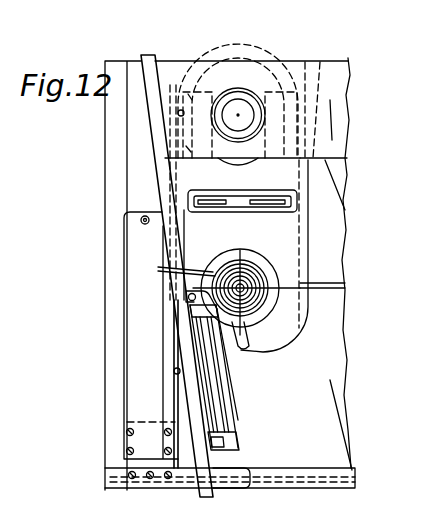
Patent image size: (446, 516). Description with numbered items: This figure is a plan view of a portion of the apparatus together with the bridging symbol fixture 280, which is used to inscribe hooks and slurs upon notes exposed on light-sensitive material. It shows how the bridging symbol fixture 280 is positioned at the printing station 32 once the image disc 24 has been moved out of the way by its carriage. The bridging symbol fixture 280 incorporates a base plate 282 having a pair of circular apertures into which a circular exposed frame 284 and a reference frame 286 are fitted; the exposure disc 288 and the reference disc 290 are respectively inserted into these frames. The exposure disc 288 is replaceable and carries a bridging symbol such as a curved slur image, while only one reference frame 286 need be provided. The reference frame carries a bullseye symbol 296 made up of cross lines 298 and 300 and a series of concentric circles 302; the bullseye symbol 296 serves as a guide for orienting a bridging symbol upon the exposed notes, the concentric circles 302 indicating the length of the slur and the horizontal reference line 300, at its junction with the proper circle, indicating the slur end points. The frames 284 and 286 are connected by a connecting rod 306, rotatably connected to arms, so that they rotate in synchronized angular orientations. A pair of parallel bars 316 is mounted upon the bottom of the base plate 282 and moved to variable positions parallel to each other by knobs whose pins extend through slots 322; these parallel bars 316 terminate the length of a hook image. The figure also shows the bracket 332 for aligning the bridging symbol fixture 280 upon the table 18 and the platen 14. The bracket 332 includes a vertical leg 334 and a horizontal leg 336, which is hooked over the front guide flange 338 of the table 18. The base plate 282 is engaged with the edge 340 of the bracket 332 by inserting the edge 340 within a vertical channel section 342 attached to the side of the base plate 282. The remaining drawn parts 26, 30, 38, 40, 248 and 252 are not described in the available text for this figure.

The platen 14 is at (330, 205).
The table 18 is at (328, 378).
The image disc 24 is at (340, 74).
The side plate 26 is at (340, 139).
The roller shaft 30 is at (248, 117).
The printing station 32 is at (239, 84).
The inclined bar 38 is at (157, 136).
The slide 40 is at (236, 443).
The foot 248 is at (210, 500).
The bearing 252 is at (238, 166).
The bridging symbol fixture 280 is at (284, 58).
The base plate 282 is at (345, 286).
The exposed frame 284 is at (266, 56).
The reference frame 286 is at (305, 249).
The exposure disc 288 is at (215, 65).
The reference disc 290 is at (278, 334).
The bullseye symbol 296 is at (254, 284).
The cross line 298 is at (242, 258).
The horizontal reference line 300 is at (231, 378).
The concentric circles 302 is at (173, 283).
The connecting rod 306 is at (185, 179).
The parallel bars 316 is at (263, 234).
The slots 322 is at (262, 223).
The bracket 332 is at (120, 442).
The vertical leg 334 is at (140, 436).
The horizontal leg 336 is at (161, 481).
The front guide flange 338 is at (287, 480).
The edge 340 is at (174, 369).
The vertical channel section 342 is at (172, 332).